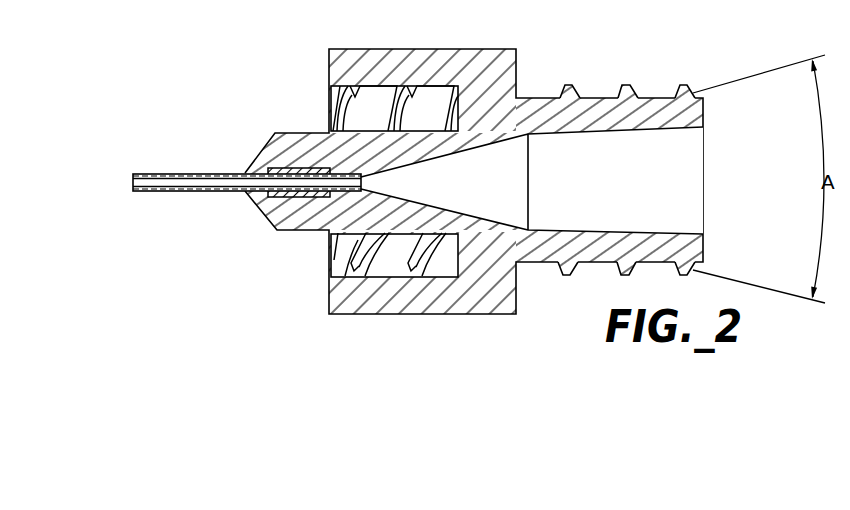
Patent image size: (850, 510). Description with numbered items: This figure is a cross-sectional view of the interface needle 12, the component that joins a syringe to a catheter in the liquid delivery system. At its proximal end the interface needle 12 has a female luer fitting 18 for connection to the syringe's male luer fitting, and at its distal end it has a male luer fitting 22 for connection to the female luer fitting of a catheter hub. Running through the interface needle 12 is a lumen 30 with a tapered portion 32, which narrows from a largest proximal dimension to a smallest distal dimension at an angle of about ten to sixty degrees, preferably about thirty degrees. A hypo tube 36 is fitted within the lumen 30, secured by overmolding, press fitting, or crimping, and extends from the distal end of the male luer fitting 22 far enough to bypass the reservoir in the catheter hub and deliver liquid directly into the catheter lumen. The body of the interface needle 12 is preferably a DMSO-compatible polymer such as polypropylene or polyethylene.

The interface needle 12 is at (446, 168).
The female luer fitting 18 is at (672, 102).
The male luer fitting 22 is at (484, 56).
The lumen 30 is at (687, 195).
The tapered portion 32 is at (488, 161).
The hypo tube 36 is at (168, 191).